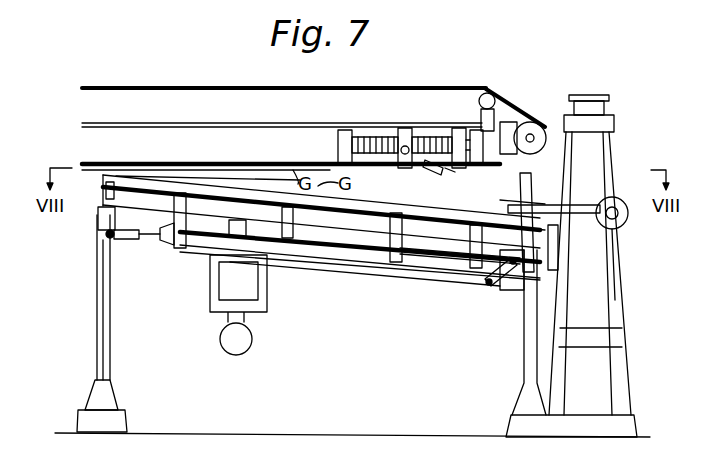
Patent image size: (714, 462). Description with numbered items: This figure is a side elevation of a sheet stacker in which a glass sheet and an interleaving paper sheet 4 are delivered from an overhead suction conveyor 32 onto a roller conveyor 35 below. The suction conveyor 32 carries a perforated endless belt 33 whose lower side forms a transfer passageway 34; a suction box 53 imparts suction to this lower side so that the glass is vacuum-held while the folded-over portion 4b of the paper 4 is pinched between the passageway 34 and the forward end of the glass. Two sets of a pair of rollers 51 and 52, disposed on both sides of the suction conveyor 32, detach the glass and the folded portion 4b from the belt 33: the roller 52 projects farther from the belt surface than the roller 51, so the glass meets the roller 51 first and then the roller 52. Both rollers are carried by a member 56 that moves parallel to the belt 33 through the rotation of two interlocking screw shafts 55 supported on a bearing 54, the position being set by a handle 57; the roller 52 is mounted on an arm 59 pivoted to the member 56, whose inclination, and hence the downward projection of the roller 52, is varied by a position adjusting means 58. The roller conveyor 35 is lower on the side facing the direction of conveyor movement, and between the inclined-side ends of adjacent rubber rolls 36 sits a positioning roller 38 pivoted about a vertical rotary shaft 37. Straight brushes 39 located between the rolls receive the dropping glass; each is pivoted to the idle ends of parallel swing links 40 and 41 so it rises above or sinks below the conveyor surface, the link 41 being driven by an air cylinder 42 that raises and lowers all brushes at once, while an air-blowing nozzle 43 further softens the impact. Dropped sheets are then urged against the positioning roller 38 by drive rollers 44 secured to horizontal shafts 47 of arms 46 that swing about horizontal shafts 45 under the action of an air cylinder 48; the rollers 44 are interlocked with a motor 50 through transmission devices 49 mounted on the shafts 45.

The paper sheet 4 is at (208, 161).
The folded-over portion of the paper 4b is at (358, 168).
The suction conveyor 32 is at (156, 89).
The endless belt 33 is at (516, 165).
The lower side passageway 34 is at (236, 176).
The roller conveyor 35 is at (320, 238).
The rubber rolls 36 is at (377, 235).
The rotary shaft 37 is at (484, 266).
The positioning roller 38 is at (535, 184).
The straight brushes 39 is at (387, 210).
The swing link 40 is at (509, 270).
The swing link 41 is at (179, 245).
The air cylinder 42 is at (127, 240).
The air-blowing nozzle 43 is at (233, 229).
The drive rollers 44 is at (433, 238).
The horizontal shafts 45 is at (617, 196).
The arms 46 is at (562, 240).
The horizontal shafts 47 is at (473, 248).
The air cylinder 48 is at (560, 270).
The transmission devices 49 is at (622, 197).
The motor 50 is at (628, 222).
The roller 51 is at (358, 136).
The roller 52 is at (428, 172).
The suction box 53 is at (158, 153).
The bearing 54 is at (338, 147).
The screw shafts 55 is at (437, 127).
The member 56 is at (406, 127).
The handle 57 is at (440, 168).
The position adjusting means 58 is at (412, 158).
The arm 59 is at (446, 124).